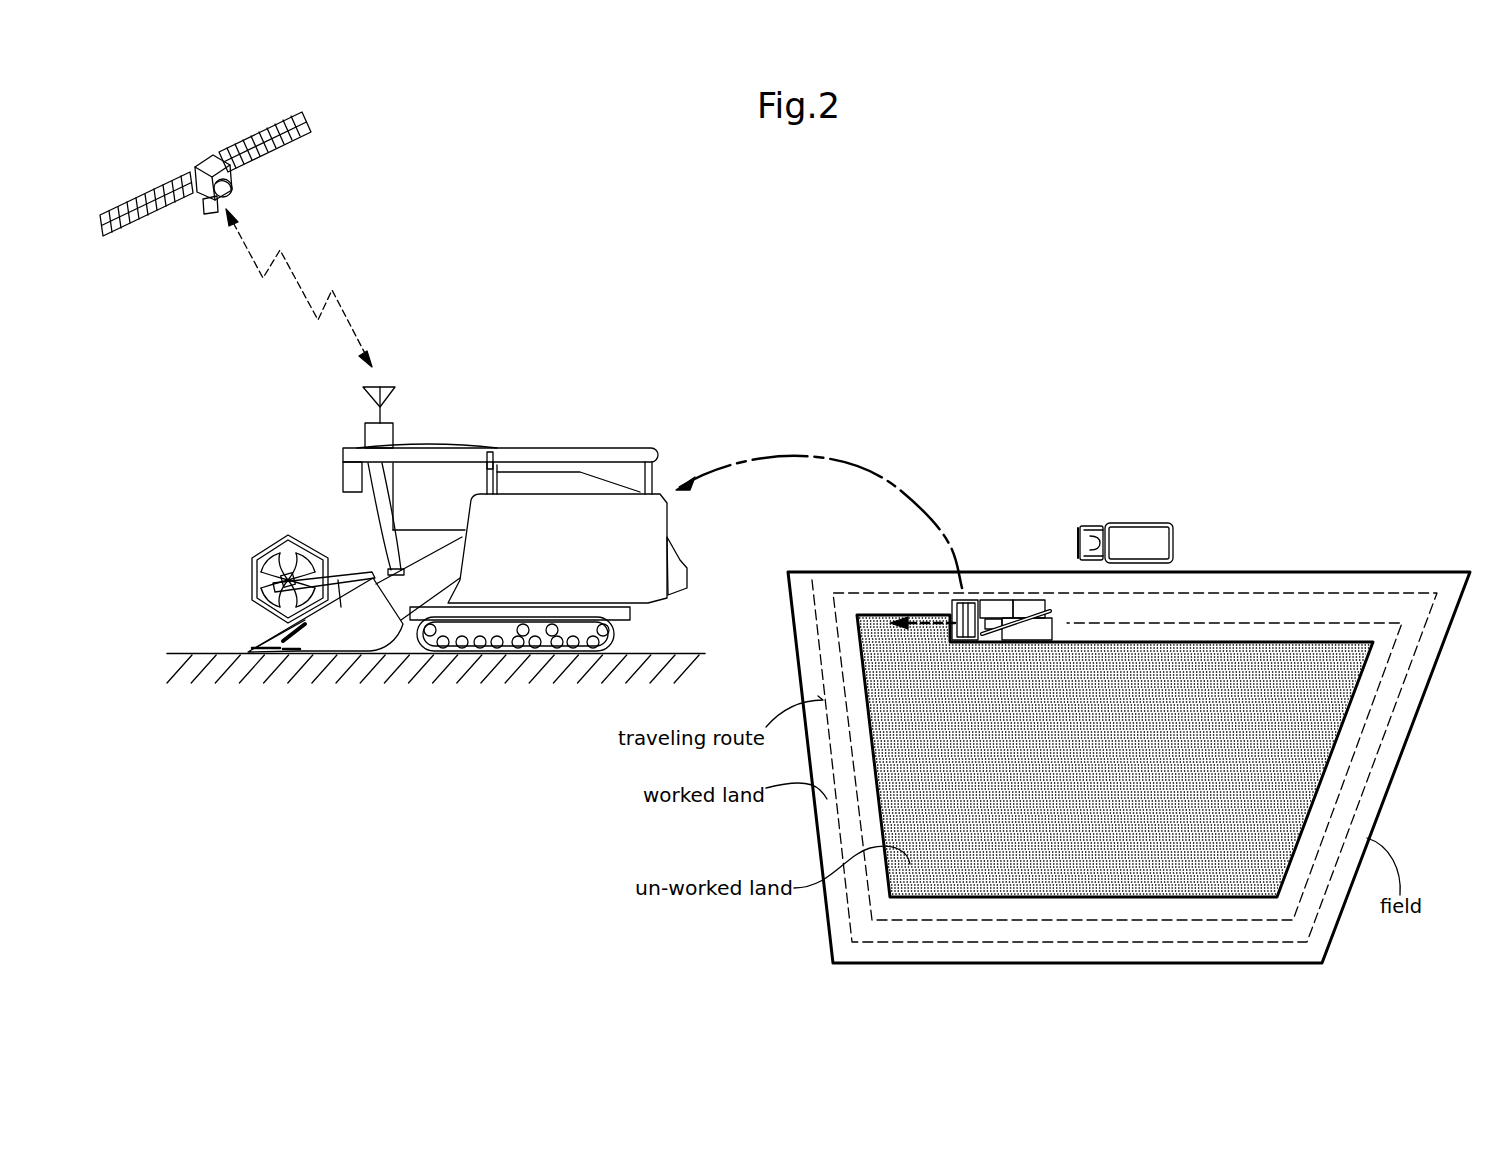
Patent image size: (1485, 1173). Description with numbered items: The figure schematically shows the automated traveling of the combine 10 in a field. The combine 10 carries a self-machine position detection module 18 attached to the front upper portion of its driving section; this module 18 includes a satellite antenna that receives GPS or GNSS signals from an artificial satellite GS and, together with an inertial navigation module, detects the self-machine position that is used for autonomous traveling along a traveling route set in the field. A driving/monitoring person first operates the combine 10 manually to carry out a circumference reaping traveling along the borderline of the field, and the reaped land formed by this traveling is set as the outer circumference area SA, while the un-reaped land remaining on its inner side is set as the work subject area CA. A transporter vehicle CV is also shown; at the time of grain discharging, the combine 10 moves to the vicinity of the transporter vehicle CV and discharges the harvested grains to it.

The artificial satellite GS is at (233, 190).
The self-machine position detection module 18 is at (392, 425).
The combine 10 is at (675, 523).
The transporter vehicle CV is at (1160, 543).
The outer circumference area SA is at (1274, 621).
The work subject area CA is at (1104, 785).